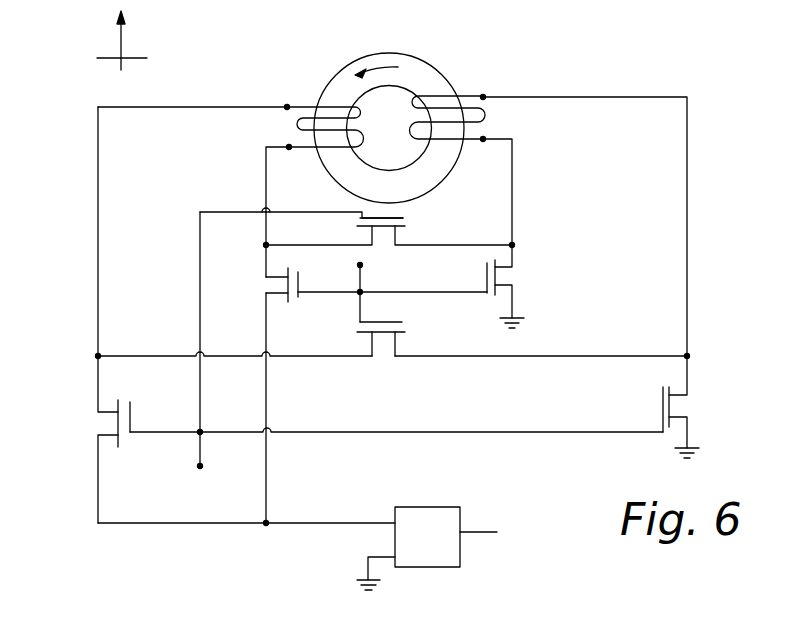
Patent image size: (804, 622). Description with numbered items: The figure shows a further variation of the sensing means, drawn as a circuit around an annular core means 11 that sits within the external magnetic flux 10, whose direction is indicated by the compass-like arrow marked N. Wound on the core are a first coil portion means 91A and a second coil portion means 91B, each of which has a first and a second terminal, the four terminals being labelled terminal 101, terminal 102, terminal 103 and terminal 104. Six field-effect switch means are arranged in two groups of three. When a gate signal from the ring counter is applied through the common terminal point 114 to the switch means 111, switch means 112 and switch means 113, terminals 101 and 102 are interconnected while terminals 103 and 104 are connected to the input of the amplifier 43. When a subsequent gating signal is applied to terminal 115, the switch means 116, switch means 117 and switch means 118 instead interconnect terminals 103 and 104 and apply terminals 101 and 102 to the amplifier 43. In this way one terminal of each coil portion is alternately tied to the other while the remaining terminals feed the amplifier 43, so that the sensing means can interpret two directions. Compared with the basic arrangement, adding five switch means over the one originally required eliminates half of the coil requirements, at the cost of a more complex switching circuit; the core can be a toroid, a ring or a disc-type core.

The external magnetic flux 10 is at (121, 40).
The annular core means 11 is at (431, 62).
The first coil portion means 91A is at (469, 95).
The second coil portion means 91B is at (338, 118).
The terminal 101 is at (484, 138).
The terminal 102 is at (289, 146).
The terminal 103 is at (287, 106).
The terminal 104 is at (484, 96).
The switch means 111 is at (384, 229).
The switch means 112 is at (680, 412).
The switch means 113 is at (98, 435).
The common terminal point 114 is at (200, 468).
The terminal 115 is at (358, 265).
The switch means 116 is at (386, 340).
The switch means 117 is at (511, 283).
The switch means 118 is at (288, 283).
The amplifier 43 is at (428, 506).